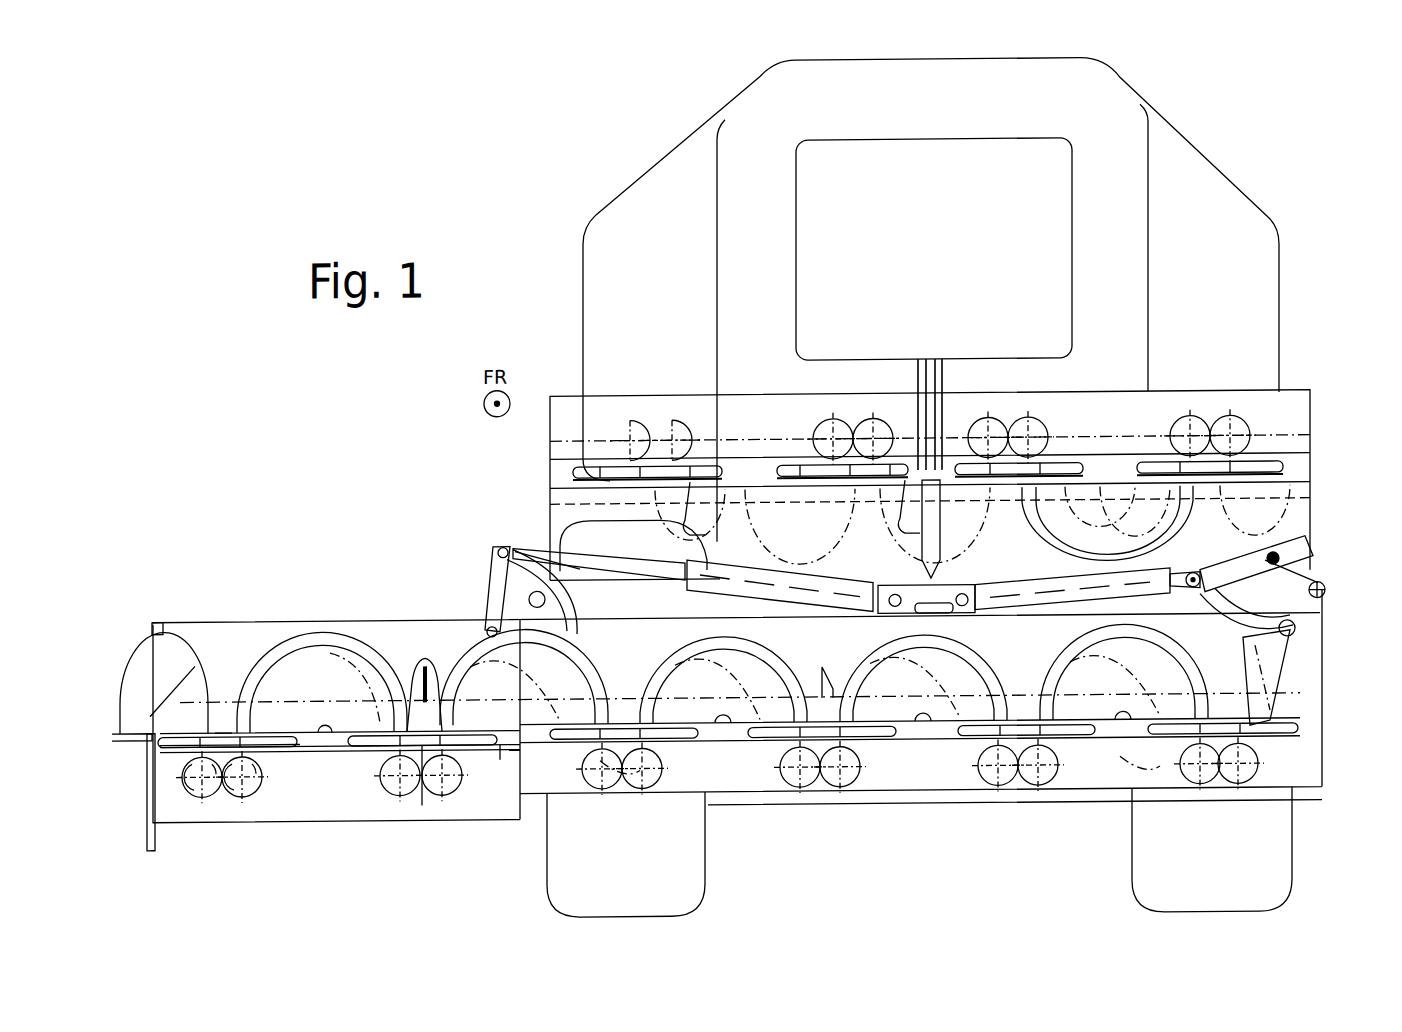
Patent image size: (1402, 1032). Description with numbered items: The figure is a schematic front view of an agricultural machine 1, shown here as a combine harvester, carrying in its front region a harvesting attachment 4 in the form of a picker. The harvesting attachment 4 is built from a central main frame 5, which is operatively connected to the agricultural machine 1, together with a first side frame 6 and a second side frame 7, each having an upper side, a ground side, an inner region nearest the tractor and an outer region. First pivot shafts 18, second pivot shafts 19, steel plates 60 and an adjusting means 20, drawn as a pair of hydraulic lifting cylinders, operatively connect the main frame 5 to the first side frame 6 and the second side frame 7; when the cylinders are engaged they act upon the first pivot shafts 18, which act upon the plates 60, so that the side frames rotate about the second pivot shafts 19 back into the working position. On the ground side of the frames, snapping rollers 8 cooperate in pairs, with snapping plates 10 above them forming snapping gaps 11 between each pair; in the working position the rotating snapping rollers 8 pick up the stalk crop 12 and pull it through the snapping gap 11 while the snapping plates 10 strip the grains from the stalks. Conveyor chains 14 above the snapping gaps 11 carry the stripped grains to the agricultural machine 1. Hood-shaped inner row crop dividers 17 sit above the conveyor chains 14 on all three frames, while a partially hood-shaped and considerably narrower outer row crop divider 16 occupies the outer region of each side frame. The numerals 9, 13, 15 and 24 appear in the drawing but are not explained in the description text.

The agricultural machine 1 is at (1113, 218).
The harvesting attachment 4 is at (1327, 460).
The main frame 5 is at (840, 653).
The first side frame 6 is at (228, 659).
The second side frame 7 is at (1265, 412).
The snapping rollers 8 is at (198, 786).
The roller gap 9 is at (222, 796).
The snapping plates 10 is at (177, 752).
The snapping gaps 11 is at (208, 741).
The stalk crop 12 is at (423, 803).
The roller 13 is at (242, 769).
The conveyor chains 14 is at (493, 758).
The blade 15 is at (412, 697).
The outer row crop divider 16 is at (150, 665).
The inner row crop dividers 17 is at (317, 667).
The first pivot shafts 18 is at (500, 543).
The second pivot shafts 19 is at (1325, 595).
The adjusting means 20 is at (1137, 596).
The post 24 is at (133, 728).
The plates 60 is at (522, 555).